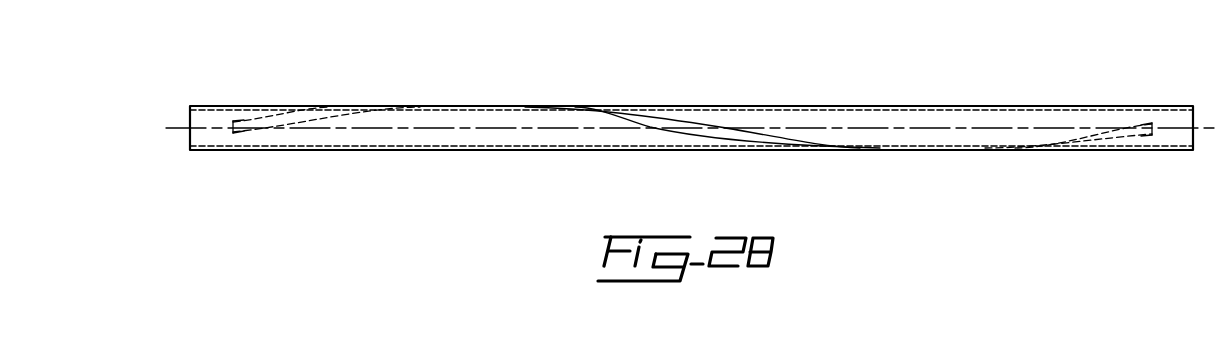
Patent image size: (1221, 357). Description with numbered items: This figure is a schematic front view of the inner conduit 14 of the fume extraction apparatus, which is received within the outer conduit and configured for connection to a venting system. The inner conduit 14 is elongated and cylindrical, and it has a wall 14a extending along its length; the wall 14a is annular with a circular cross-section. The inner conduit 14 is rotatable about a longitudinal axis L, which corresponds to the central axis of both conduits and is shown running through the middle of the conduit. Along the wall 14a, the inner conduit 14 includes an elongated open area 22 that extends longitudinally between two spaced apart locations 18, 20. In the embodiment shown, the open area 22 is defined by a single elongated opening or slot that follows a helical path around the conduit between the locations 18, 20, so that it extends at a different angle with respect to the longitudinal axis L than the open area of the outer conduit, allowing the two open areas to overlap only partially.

The inner conduit 14 is at (222, 110).
The wall 14a is at (673, 80).
The spaced apart location 18 is at (233, 133).
The spaced apart location 20 is at (1152, 133).
The open area 22 is at (683, 127).
The longitudinal axis L is at (1180, 128).